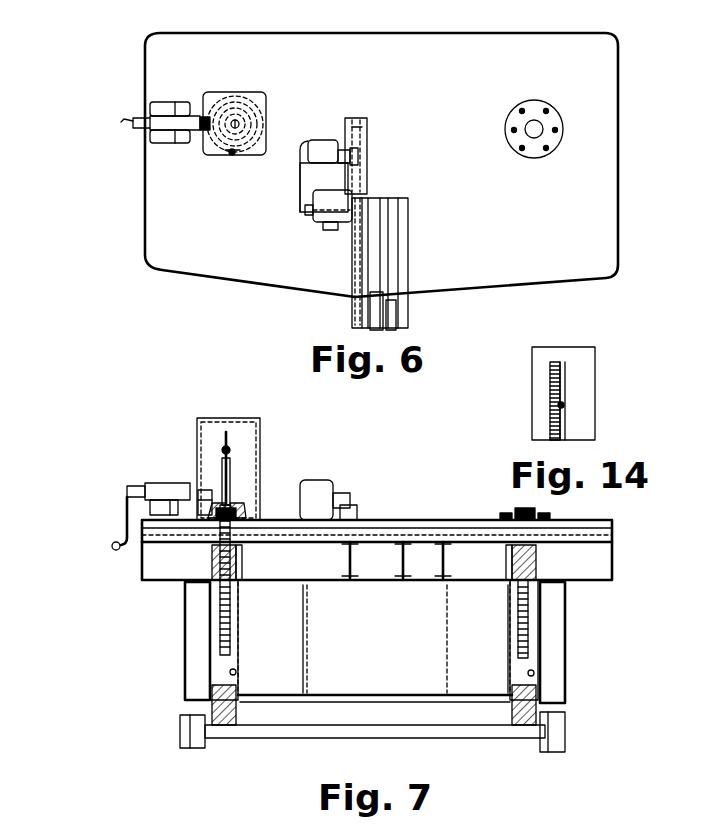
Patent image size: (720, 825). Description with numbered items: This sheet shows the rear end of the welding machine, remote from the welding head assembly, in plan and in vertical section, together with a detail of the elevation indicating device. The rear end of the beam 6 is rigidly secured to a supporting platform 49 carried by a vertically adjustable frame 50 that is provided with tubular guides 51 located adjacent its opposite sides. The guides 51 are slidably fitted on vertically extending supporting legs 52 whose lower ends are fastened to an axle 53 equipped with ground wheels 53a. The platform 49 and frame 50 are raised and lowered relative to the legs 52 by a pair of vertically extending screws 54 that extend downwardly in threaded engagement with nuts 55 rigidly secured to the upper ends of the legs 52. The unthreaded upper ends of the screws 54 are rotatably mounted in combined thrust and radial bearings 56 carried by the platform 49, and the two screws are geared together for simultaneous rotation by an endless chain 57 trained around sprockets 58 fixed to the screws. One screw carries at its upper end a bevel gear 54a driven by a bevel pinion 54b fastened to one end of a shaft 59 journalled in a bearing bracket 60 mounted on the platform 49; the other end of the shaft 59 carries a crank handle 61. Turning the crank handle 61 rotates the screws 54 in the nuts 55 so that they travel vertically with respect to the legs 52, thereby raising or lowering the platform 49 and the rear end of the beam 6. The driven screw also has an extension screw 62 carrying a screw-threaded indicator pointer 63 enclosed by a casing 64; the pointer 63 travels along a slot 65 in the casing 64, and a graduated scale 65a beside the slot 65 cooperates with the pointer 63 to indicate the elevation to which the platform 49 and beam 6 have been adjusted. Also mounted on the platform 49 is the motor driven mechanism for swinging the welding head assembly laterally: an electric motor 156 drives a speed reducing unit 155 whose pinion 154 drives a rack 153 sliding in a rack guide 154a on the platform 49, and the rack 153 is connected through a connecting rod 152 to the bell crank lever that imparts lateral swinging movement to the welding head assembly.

In FIG. 6, the beam 6 is at (352, 310).
In FIG. 6, the supporting platform 49 is at (540, 278).
In FIG. 7, the supporting platform 49 is at (142, 562).
In FIG. 7, the vertically adjustable frame 50 is at (185, 605).
In FIG. 7, the tubular guides 51 is at (242, 638).
In FIG. 7, the supporting legs 52 is at (236, 673).
In FIG. 7, the axle 53 is at (360, 707).
In FIG. 7, the ground wheels 53a is at (190, 748).
In FIG. 7, the screws 54 is at (234, 605).
In FIG. 7, the bevel gear 54a is at (246, 502).
In FIG. 7, the bevel pinion 54b is at (204, 490).
In FIG. 7, the nuts 55 is at (240, 555).
In FIG. 6, the combined thrust and radial bearings 56 is at (545, 126).
In FIG. 7, the combined thrust and radial bearings 56 is at (238, 512).
In FIG. 6, the endless chain 57 is at (252, 120).
In FIG. 7, the endless chain 57 is at (366, 538).
In FIG. 6, the sprockets 58 is at (213, 110).
In FIG. 7, the sprockets 58 is at (211, 533).
In FIG. 7, the shaft 59 is at (236, 492).
In FIG. 6, the bearing bracket 60 is at (177, 131).
In FIG. 7, the bearing bracket 60 is at (160, 490).
In FIG. 6, the crank handle 61 is at (118, 136).
In FIG. 7, the crank handle 61 is at (126, 522).
In FIG. 6, the extension screw 62 is at (237, 122).
In FIG. 7, the extension screw 62 is at (222, 440).
In FIG. 6, the indicator pointer 63 is at (232, 155).
In FIG. 14, the indicator pointer 63 is at (563, 407).
In FIG. 7, the indicator pointer 63 is at (231, 450).
In FIG. 6, the casing 64 is at (262, 157).
In FIG. 14, the casing 64 is at (532, 387).
In FIG. 7, the casing 64 is at (260, 421).
In FIG. 14, the slot 65 is at (566, 380).
In FIG. 6, the graduated scale 65a is at (226, 152).
In FIG. 14, the graduated scale 65a is at (555, 425).
In FIG. 6, the connecting rod 152 is at (356, 250).
In FIG. 6, the rack 153 is at (362, 138).
In FIG. 7, the rack 153 is at (353, 507).
In FIG. 6, the pinion 154 is at (359, 157).
In FIG. 7, the pinion 154 is at (347, 493).
In FIG. 6, the rack guide 154a is at (357, 127).
In FIG. 7, the rack guide 154a is at (358, 512).
In FIG. 6, the speed reducing unit 155 is at (300, 152).
In FIG. 6, the electric motor 156 is at (318, 222).